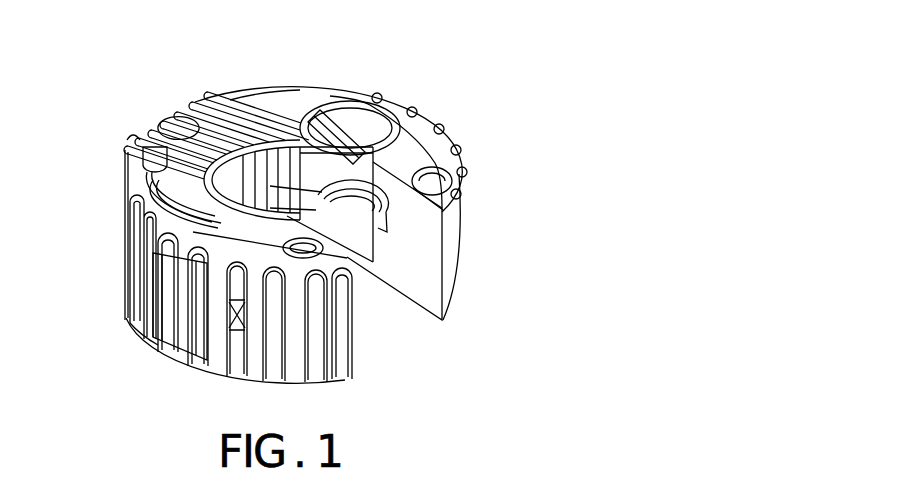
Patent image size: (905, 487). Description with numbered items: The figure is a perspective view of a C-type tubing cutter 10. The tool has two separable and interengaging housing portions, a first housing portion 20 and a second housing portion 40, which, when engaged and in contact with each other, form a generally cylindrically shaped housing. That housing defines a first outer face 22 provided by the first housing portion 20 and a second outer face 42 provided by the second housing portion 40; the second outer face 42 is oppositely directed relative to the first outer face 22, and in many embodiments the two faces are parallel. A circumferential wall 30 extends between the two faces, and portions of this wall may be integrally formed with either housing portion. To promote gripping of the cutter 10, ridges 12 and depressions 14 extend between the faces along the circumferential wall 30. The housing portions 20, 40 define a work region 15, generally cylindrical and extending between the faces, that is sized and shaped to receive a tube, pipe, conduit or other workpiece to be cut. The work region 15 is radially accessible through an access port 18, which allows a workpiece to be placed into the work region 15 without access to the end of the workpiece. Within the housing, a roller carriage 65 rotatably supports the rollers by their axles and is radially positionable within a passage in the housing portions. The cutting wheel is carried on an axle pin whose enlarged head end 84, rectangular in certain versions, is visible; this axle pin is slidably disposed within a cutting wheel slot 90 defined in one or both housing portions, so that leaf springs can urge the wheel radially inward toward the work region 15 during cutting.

The C-type tubing cutter 10 is at (522, 77).
The ridges 12 is at (262, 82).
The depressions 14 is at (417, 117).
The work region 15 is at (385, 306).
The access port 18 is at (393, 350).
The first housing portion 20 is at (453, 217).
The first outer face 22 is at (292, 96).
The circumferential wall 30 is at (124, 246).
The second housing portion 40 is at (450, 275).
The second outer face 42 is at (148, 351).
The roller carriage 65 is at (168, 293).
The enlarged head end 84 is at (364, 130).
The cutting wheel slot 90 is at (360, 140).